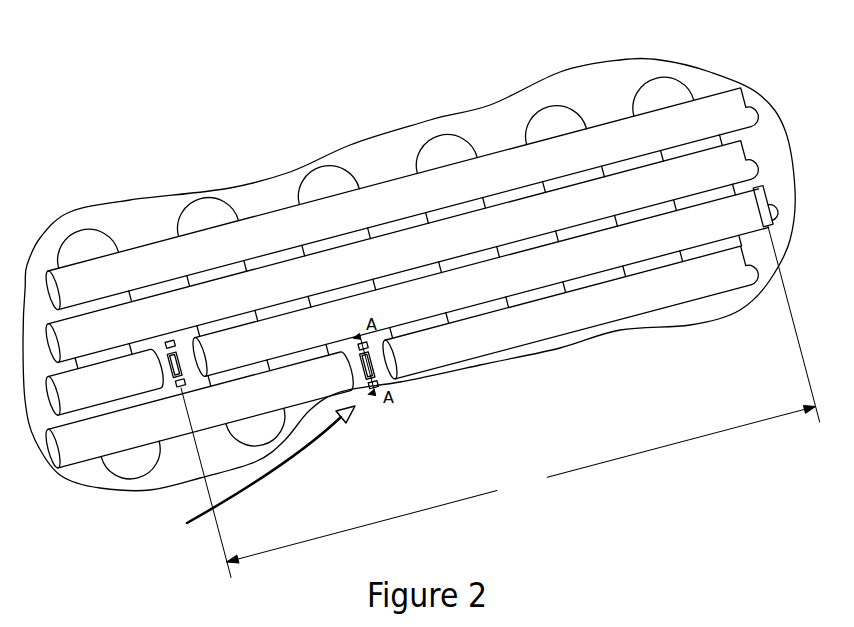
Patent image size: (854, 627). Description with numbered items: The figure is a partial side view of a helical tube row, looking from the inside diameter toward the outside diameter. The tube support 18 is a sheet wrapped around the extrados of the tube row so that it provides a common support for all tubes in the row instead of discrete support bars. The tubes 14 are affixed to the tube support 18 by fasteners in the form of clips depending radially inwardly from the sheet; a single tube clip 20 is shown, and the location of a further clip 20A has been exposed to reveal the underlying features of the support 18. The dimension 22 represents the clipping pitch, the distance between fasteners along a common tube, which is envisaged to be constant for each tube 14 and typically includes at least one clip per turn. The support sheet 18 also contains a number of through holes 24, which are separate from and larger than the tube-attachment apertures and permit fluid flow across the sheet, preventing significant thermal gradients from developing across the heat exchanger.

The tube 14 is at (615, 137).
The tube support 18 is at (491, 123).
The tube clip 20 is at (768, 224).
The further clip 20A is at (181, 388).
The clipping pitch dimension 22 is at (499, 402).
The through hole 24 is at (317, 186).